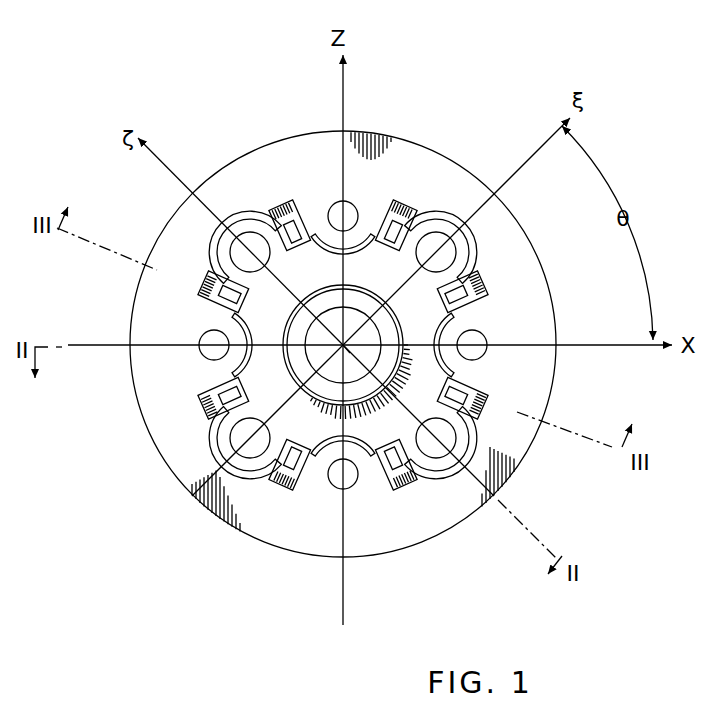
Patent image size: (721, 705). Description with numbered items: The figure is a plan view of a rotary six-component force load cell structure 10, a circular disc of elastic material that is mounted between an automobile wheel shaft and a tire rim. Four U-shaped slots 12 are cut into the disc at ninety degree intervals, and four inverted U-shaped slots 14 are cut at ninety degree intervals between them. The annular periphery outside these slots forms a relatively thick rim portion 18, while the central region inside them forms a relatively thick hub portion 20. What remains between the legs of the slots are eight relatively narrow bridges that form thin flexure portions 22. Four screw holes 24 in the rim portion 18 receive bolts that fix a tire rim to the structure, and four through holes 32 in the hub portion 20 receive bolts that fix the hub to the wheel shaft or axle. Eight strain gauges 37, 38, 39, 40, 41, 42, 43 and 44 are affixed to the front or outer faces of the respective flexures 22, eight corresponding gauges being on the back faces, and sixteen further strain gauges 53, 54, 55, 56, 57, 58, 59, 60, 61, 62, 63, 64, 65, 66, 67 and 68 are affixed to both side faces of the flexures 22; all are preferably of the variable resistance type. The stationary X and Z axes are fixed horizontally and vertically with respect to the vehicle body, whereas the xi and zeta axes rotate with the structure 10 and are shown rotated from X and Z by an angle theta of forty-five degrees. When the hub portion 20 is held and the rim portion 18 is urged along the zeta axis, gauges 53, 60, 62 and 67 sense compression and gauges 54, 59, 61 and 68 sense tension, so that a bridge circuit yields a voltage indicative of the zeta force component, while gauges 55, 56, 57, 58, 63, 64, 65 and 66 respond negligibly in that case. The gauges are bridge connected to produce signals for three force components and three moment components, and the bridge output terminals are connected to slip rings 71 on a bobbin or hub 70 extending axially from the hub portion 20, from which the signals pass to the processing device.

The rotary six-component force load cell structure 10 is at (497, 90).
The U-shaped slots 12 is at (372, 240).
The inverted U-shaped slots 14 is at (232, 213).
The rim portion 18 is at (519, 337).
The hub portion 20 is at (404, 317).
The flexure portions 22 is at (283, 203).
The screw holes 24 is at (338, 203).
The through holes 32 is at (257, 272).
The strain gauge 37 is at (480, 290).
The strain gauge 38 is at (478, 410).
The strain gauge 39 is at (404, 482).
The strain gauge 40 is at (288, 490).
The strain gauge 41 is at (214, 418).
The strain gauge 42 is at (193, 280).
The strain gauge 43 is at (306, 243).
The strain gauge 44 is at (405, 212).
The strain gauge 53 is at (478, 272).
The strain gauge 54 is at (490, 310).
The strain gauge 55 is at (490, 380).
The strain gauge 56 is at (477, 423).
The strain gauge 57 is at (455, 478).
The strain gauge 58 is at (388, 492).
The strain gauge 59 is at (336, 493).
The strain gauge 60 is at (232, 490).
The strain gauge 61 is at (212, 445).
The strain gauge 62 is at (210, 395).
The strain gauge 63 is at (206, 305).
The strain gauge 64 is at (208, 300).
The strain gauge 65 is at (268, 212).
The strain gauge 66 is at (293, 203).
The strain gauge 67 is at (395, 205).
The strain gauge 68 is at (418, 215).
The bobbin or hub 70 is at (307, 355).
The slip rings 71 is at (294, 382).